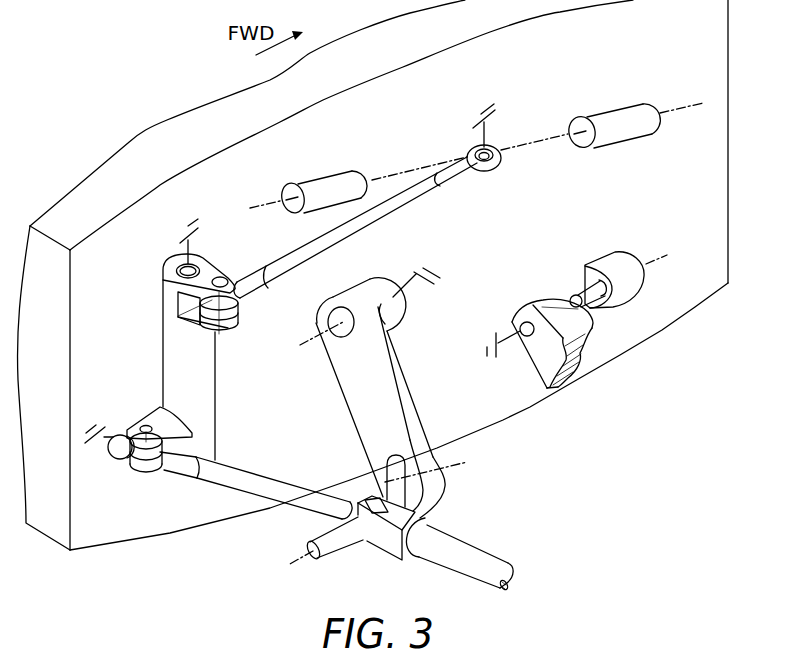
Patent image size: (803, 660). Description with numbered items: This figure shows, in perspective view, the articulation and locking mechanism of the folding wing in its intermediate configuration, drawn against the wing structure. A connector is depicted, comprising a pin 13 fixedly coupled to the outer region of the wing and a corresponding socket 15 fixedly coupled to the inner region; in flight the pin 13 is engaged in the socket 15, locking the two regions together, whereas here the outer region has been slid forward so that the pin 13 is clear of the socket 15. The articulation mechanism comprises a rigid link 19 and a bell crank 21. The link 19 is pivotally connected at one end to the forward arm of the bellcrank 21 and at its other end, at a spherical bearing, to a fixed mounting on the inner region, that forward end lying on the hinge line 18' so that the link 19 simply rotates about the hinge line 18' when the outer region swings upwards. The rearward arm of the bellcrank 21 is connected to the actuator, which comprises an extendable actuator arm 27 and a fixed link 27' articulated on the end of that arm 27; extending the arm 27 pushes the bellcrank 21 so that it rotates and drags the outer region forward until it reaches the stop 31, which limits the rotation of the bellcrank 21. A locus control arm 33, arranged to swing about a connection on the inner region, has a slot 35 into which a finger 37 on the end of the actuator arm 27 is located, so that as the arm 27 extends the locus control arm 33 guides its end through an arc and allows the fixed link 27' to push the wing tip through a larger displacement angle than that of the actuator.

The pin 13 is at (588, 244).
The socket 15 is at (549, 301).
The hinge line 18' is at (639, 132).
The rigid link 19 is at (412, 205).
The bell crank 21 is at (207, 381).
The actuator arm 27 is at (466, 550).
The fixed link 27' is at (256, 505).
The stop 31 is at (121, 432).
The locus control arm 33 is at (344, 395).
The slot 35 is at (418, 436).
The finger 37 is at (368, 490).